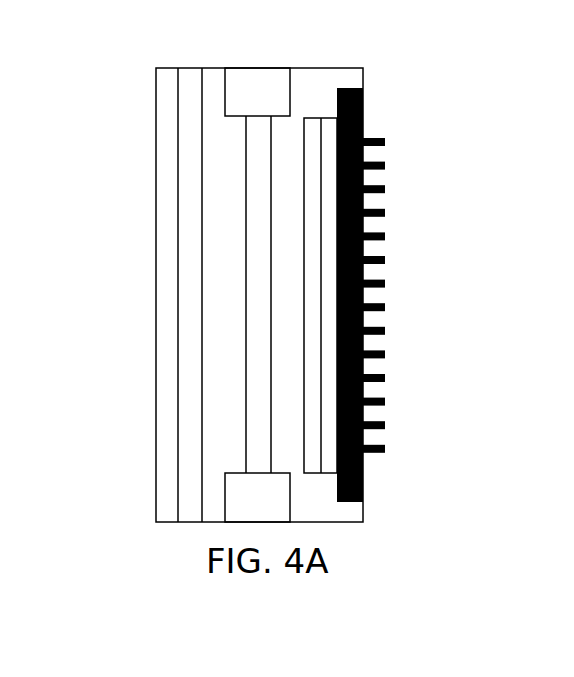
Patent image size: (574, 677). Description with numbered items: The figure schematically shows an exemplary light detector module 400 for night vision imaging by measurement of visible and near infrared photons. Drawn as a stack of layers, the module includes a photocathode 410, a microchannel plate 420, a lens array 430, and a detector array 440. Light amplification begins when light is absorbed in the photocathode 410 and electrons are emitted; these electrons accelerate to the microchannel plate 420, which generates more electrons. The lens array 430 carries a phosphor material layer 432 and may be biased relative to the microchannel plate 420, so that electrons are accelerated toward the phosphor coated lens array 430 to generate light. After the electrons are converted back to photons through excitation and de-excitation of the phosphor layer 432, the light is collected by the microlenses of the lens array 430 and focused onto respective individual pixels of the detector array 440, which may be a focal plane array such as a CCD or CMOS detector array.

The light detector module 400 is at (132, 85).
The photocathode 410 is at (179, 347).
The microchannel plate 420 is at (246, 150).
The lens array 430 is at (315, 121).
The phosphor material layer 432 is at (330, 121).
The detector array 440 is at (363, 108).